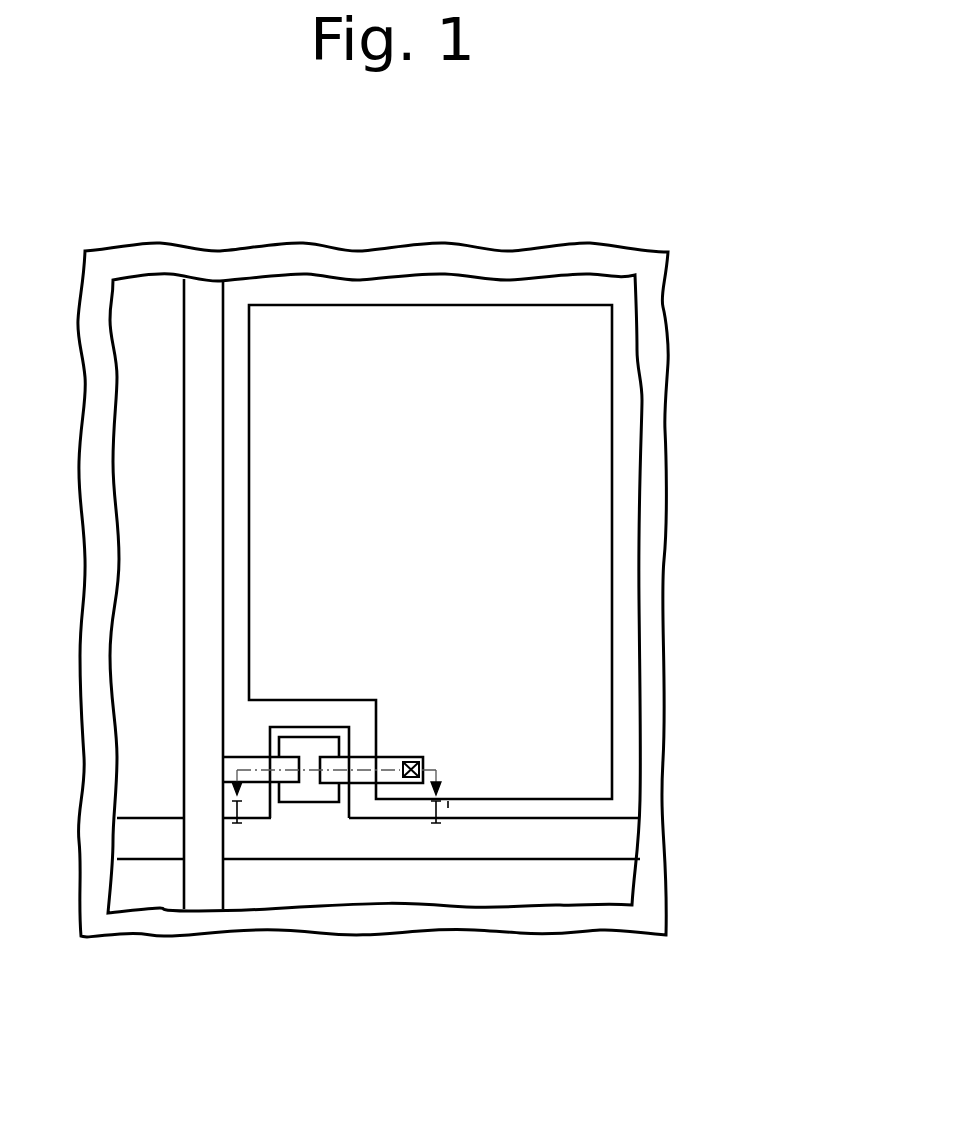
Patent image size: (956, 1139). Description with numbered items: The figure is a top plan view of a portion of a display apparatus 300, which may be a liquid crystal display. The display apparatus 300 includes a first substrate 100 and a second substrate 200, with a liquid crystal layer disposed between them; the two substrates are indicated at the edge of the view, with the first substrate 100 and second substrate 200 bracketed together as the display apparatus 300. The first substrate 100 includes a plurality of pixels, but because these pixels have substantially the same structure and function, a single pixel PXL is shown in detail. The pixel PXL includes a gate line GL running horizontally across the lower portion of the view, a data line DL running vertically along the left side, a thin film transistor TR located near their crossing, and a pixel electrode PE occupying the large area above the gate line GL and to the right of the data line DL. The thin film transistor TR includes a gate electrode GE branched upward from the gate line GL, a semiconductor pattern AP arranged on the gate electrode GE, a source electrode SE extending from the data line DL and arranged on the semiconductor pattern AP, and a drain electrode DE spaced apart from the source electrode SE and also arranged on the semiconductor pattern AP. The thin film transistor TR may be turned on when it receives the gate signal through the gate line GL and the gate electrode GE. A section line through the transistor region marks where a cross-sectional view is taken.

The first substrate 100 is at (642, 385).
The second substrate 200 is at (663, 307).
The display apparatus 300 is at (757, 297).
The data line DL is at (204, 895).
The gate line GL is at (623, 840).
The pixel electrode PE is at (513, 787).
The gate electrode GE is at (335, 812).
The semiconductor pattern AP is at (298, 795).
The source electrode SE is at (252, 777).
The drain electrode DE is at (397, 777).
The thin film transistor TR is at (323, 885).
The pixel PXL is at (417, 698).